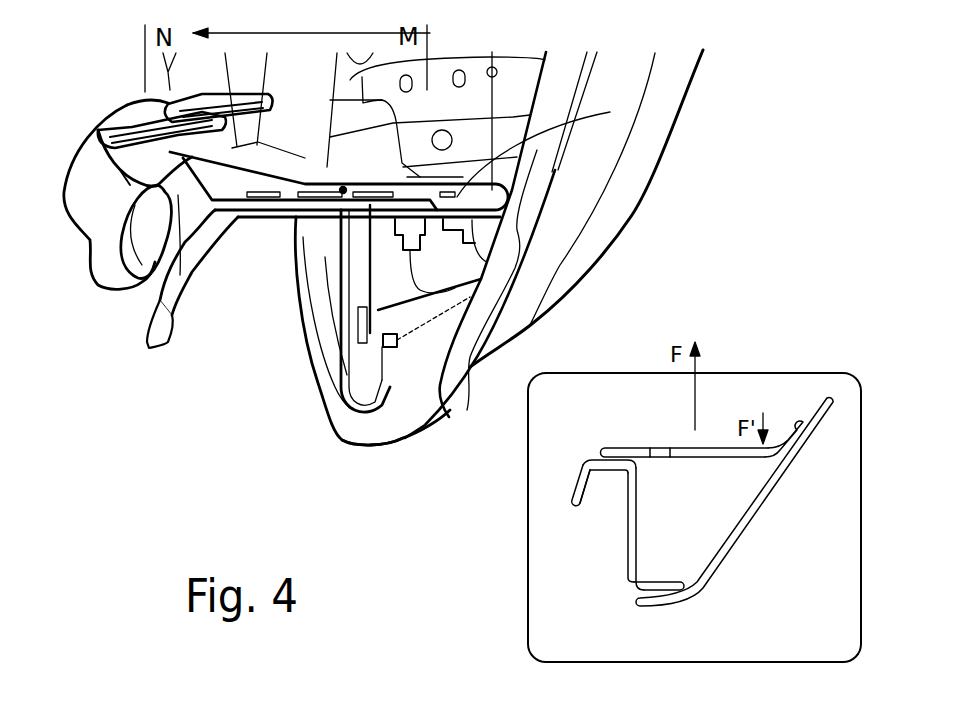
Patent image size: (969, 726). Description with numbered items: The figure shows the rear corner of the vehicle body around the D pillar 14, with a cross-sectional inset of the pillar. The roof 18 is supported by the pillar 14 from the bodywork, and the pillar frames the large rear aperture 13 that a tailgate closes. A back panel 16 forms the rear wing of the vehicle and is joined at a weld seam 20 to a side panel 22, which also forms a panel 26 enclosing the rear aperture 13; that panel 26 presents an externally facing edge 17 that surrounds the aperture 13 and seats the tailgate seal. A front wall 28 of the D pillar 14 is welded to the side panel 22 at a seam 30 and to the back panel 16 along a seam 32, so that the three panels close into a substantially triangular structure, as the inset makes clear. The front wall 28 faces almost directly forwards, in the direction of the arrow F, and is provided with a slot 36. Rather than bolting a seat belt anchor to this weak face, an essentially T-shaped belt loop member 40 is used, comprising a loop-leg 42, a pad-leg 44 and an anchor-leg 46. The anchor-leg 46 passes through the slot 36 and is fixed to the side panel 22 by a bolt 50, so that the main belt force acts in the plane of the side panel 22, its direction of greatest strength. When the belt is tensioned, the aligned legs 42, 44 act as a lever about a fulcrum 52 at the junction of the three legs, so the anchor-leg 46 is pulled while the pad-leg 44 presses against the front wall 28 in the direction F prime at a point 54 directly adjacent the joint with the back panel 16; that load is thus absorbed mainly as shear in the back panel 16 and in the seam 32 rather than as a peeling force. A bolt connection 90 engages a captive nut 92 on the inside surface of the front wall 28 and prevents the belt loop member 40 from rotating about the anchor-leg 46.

The rear aperture 13 is at (143, 342).
The D pillar 14 is at (416, 437).
The back panel 16 is at (447, 407).
The externally facing edge 17 is at (150, 350).
The roof 18 is at (602, 218).
The weld seam 20 is at (342, 437).
The side panel 22 is at (303, 337).
The panel enclosing the rear aperture 26 is at (612, 470).
The front wall 28 is at (487, 261).
The seam 30 is at (243, 218).
The seam 32 is at (505, 168).
The slot 36 is at (652, 457).
The belt loop member 40 is at (107, 293).
The loop-leg 42 is at (228, 168).
The pad-leg 44 is at (610, 112).
The anchor-leg 46 is at (358, 264).
The bolt 50 is at (385, 345).
The fulcrum 52 is at (343, 190).
The point of force application 54 is at (763, 455).
The bolt connection 90 is at (392, 307).
The captive nut 92 is at (395, 244).